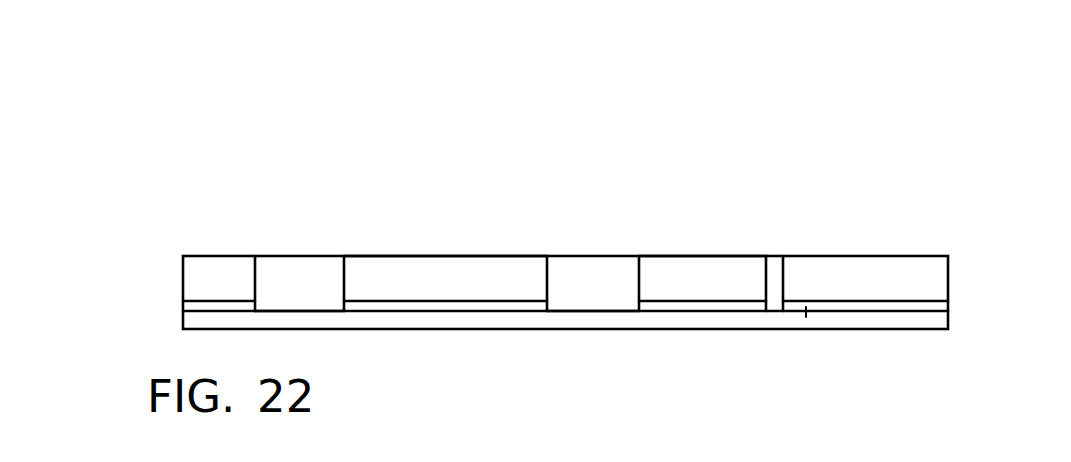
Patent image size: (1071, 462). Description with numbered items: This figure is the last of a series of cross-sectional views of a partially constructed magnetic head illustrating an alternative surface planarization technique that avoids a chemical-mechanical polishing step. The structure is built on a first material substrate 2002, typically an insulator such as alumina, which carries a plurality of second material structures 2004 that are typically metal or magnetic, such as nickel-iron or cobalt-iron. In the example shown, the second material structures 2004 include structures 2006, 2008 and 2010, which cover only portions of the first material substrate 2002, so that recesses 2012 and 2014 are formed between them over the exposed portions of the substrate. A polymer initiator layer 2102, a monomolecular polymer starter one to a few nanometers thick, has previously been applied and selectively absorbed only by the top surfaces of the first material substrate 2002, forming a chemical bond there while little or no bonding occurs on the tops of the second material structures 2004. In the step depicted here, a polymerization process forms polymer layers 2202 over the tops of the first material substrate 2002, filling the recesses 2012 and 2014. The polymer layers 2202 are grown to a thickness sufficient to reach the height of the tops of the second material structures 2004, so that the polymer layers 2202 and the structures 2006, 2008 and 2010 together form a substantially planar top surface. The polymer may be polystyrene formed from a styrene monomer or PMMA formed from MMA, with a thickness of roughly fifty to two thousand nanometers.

The second material structures 2004 is at (248, 157).
The first material substrate 2002 is at (184, 316).
The polymer initiator layer 2102 is at (184, 306).
The polymer layers 2202 is at (213, 278).
The structure 2006 is at (303, 257).
The structure 2008 is at (597, 258).
The structure 2010 is at (773, 258).
The recess 2012 is at (389, 285).
The recess 2014 is at (699, 287).